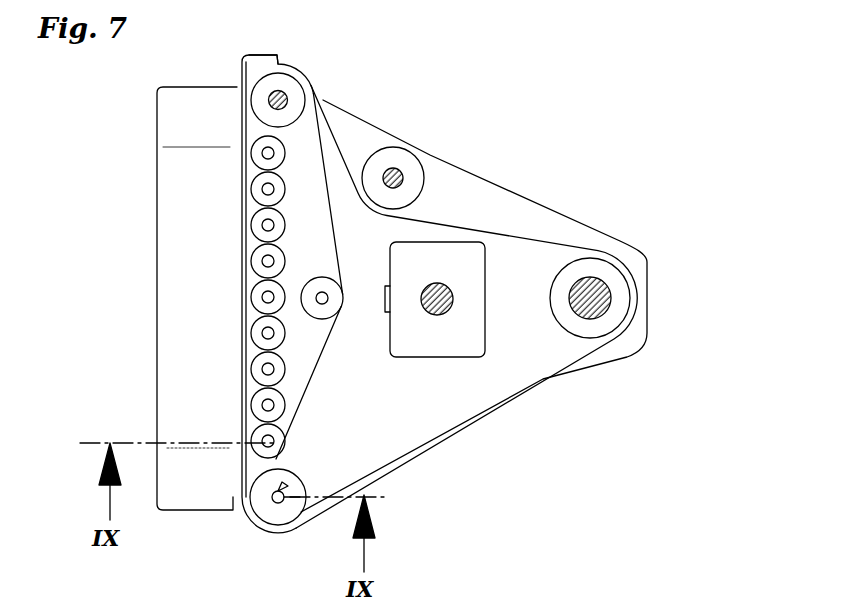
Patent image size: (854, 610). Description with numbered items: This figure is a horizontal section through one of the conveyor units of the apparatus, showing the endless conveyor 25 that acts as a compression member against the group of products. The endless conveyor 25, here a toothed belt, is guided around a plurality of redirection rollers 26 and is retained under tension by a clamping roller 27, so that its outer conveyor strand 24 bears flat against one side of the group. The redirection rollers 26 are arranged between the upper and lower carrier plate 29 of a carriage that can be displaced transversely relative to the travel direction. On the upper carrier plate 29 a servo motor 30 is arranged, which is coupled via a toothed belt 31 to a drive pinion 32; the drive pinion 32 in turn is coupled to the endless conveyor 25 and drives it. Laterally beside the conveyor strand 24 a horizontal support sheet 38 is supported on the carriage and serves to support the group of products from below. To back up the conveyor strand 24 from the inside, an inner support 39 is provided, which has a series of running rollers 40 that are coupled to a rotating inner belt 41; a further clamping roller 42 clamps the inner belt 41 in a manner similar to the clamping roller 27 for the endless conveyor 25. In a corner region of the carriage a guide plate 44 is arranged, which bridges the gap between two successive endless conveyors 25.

The conveyor strand 24 is at (243, 165).
The endless conveyor 25 is at (516, 230).
The redirection rollers 26 is at (265, 101).
The clamping roller 27 is at (398, 168).
The carrier plate 29 is at (457, 187).
The servo motor 30 is at (452, 338).
The toothed belt 31 is at (567, 609).
The drive pinion 32 is at (623, 298).
The support sheet 38 is at (180, 347).
The inner support 39 is at (322, 180).
The running rollers 40 is at (252, 233).
The inner belt 41 is at (315, 392).
The clamping roller 42 is at (328, 308).
The guide plate 44 is at (260, 54).